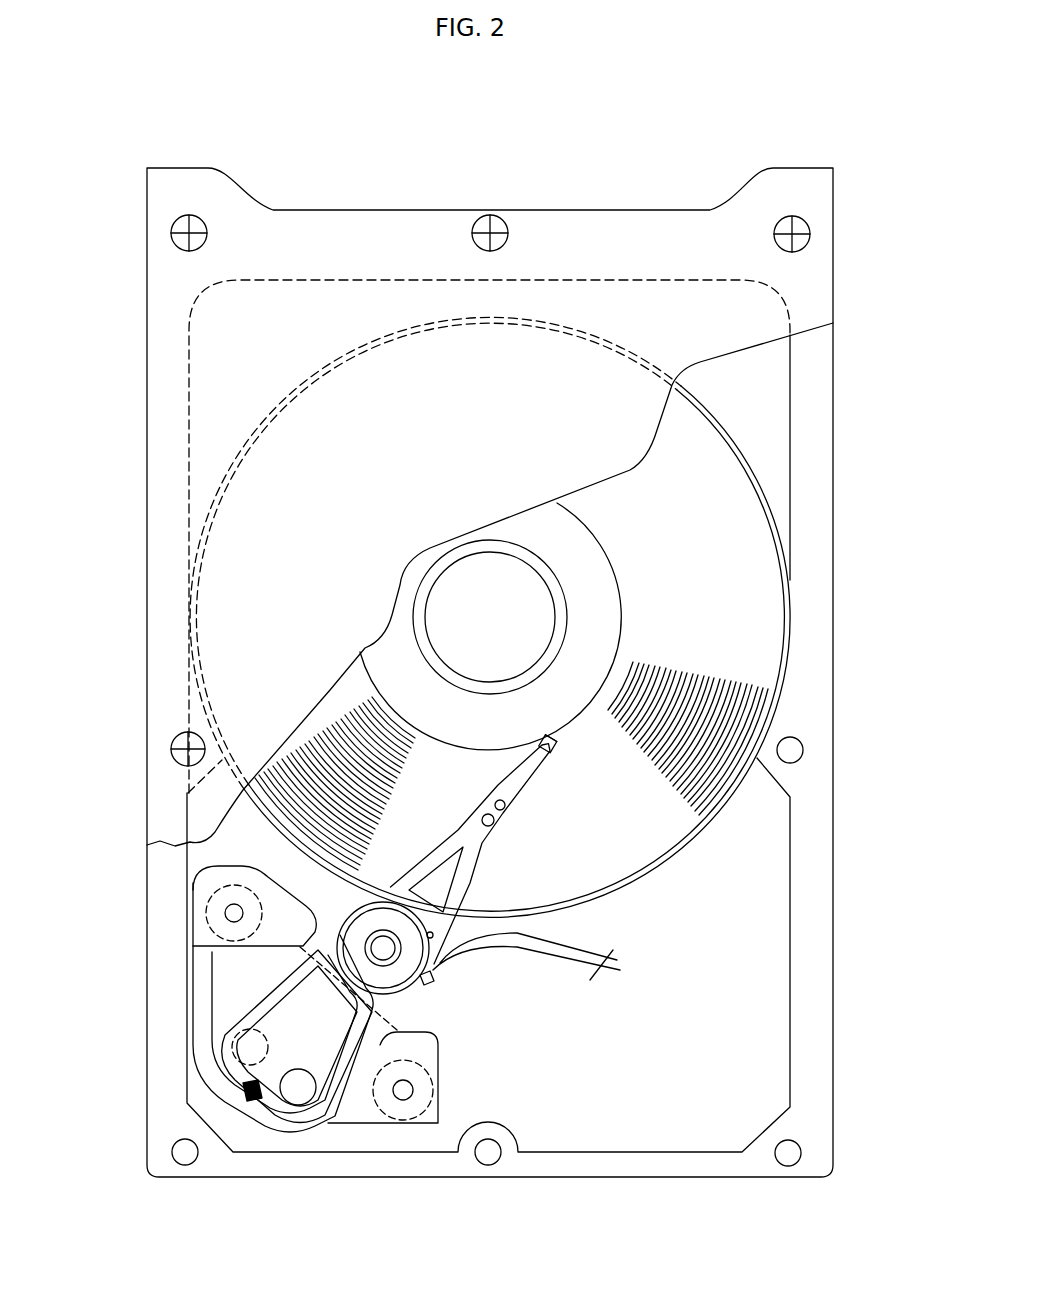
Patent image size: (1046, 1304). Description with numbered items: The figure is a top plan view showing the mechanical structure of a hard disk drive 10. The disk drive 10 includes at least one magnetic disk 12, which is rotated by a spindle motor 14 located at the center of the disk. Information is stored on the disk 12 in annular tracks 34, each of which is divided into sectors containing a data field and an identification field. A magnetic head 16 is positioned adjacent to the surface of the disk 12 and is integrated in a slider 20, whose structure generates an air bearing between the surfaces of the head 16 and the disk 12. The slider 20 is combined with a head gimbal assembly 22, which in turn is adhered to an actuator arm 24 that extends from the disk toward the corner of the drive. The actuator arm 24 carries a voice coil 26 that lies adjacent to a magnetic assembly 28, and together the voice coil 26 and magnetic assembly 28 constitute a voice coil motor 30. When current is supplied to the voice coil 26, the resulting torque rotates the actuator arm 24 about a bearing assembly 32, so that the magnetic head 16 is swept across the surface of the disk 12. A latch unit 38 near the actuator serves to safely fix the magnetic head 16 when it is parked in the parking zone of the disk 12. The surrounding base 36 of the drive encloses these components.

The hard disk drive 10 is at (667, 147).
The magnetic disk 12 is at (740, 556).
The spindle motor 14 is at (465, 593).
The magnetic head 16 is at (548, 755).
The slider 20 is at (527, 778).
The head gimbal assembly 22 is at (477, 887).
The actuator arm 24 is at (290, 967).
The voice coil 26 is at (207, 1035).
The magnetic assembly 28 is at (233, 982).
The voice coil motor 30 is at (353, 1103).
The bearing assembly 32 is at (393, 963).
The annular tracks 34 is at (350, 752).
The base 36 is at (795, 960).
The latch unit 38 is at (240, 1097).